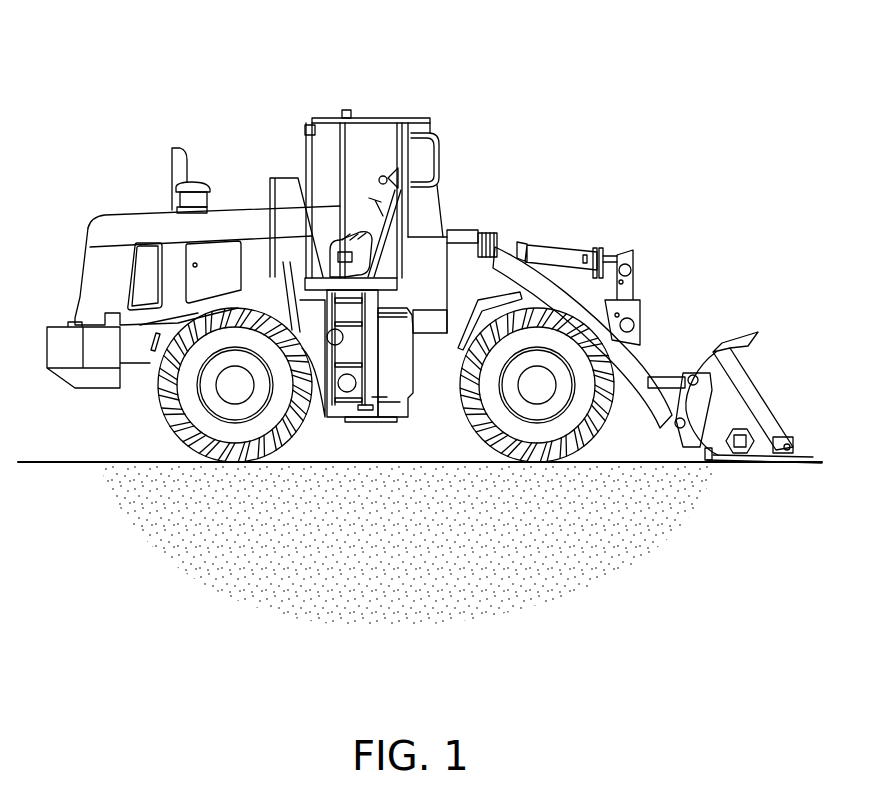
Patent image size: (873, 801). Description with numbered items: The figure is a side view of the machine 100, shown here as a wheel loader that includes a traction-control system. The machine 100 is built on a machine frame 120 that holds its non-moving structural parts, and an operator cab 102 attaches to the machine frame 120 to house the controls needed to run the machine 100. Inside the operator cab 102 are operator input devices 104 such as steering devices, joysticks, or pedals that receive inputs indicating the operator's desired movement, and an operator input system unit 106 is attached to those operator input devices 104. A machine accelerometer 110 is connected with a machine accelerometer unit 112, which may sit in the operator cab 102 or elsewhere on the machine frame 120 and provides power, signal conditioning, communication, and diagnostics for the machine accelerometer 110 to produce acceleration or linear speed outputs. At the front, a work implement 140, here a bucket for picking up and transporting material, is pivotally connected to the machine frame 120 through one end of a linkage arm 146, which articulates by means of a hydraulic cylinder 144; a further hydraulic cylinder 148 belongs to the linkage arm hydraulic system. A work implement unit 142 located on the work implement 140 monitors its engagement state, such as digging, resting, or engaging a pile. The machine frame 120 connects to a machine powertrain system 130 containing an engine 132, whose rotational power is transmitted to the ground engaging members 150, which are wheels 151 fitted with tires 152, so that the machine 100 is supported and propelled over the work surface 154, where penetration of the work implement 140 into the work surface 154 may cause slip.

The machine 100 is at (660, 97).
The operator cab 102 is at (367, 140).
The operator input devices 104 is at (396, 167).
The operator input system unit 106 is at (447, 197).
The machine accelerometer 110 is at (332, 257).
The machine accelerometer unit 112 is at (336, 253).
The machine frame 120 is at (75, 288).
The machine powertrain system 130 is at (170, 247).
The engine 132 is at (178, 247).
The work implement 140 is at (772, 401).
The work implement unit 142 is at (797, 459).
The hydraulic cylinder 144 is at (663, 377).
The linkage arm 146 is at (533, 285).
The hydraulic cylinder 148 is at (610, 265).
The ground engaging members 150 is at (172, 431).
The wheels 151 is at (203, 422).
The tires 152 is at (249, 452).
The work surface 154 is at (110, 462).